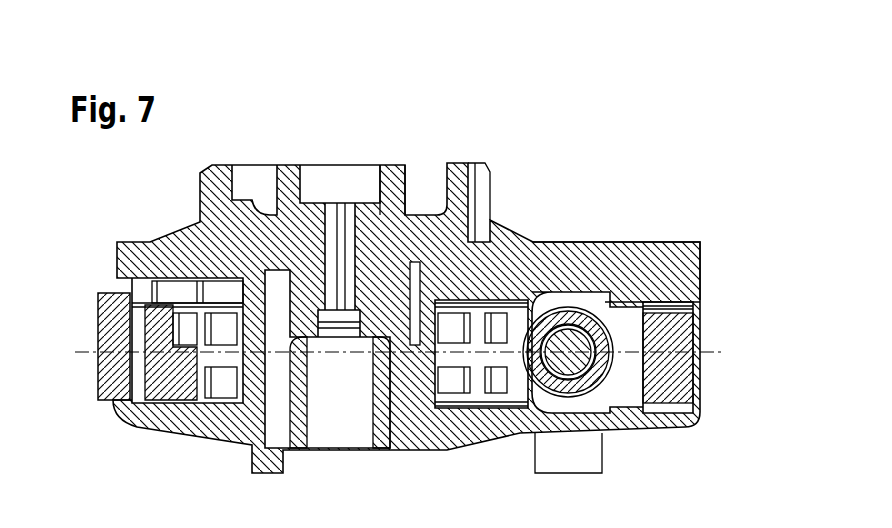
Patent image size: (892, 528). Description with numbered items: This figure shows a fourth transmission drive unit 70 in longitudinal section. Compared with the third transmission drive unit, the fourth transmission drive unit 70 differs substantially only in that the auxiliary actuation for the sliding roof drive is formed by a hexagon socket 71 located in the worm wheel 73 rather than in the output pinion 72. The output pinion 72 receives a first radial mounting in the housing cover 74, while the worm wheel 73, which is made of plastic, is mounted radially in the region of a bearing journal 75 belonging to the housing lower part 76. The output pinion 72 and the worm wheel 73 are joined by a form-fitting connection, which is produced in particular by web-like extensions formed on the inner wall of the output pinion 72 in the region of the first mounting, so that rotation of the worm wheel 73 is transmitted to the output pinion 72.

The fourth transmission drive unit 70 is at (556, 140).
The hexagon socket 71 is at (338, 203).
The output pinion 72 is at (390, 156).
The worm wheel 73 is at (173, 368).
The housing cover 74 is at (658, 257).
The bearing journal 75 is at (296, 392).
The housing lower part 76 is at (708, 387).